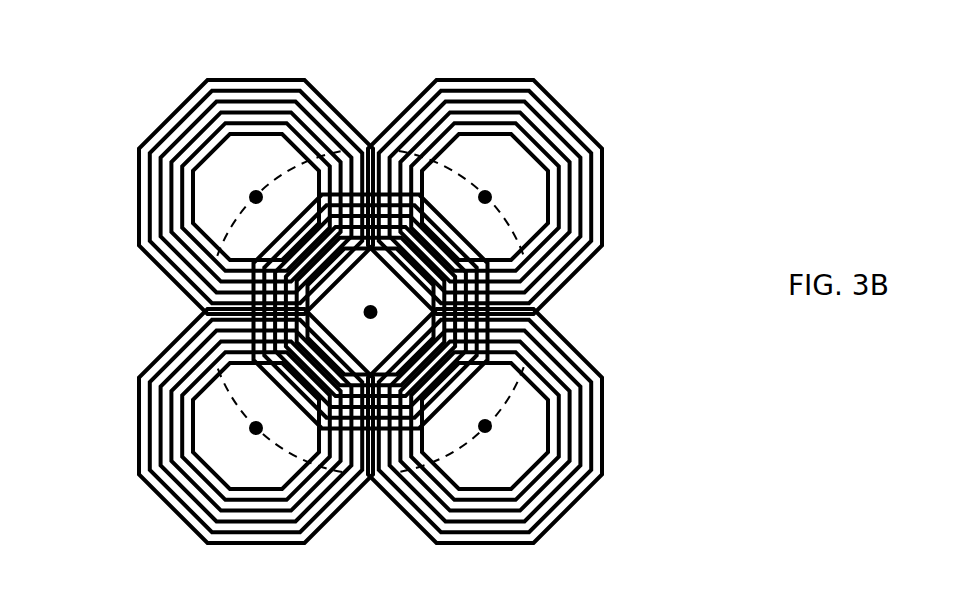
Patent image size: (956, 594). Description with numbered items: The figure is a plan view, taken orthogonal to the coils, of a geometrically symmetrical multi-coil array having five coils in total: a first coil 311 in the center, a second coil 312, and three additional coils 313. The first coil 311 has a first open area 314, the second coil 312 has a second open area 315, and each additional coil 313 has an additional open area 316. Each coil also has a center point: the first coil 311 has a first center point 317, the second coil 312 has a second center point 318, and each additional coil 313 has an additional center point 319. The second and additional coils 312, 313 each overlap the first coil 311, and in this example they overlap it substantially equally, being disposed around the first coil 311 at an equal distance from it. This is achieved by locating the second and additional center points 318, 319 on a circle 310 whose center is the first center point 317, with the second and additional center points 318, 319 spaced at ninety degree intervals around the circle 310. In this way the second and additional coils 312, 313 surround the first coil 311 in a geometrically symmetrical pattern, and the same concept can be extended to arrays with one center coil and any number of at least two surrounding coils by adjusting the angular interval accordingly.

The circle 310 is at (455, 309).
The first coil 311 is at (160, 422).
The second coil 312 is at (536, 179).
The additional coils 313 is at (365, 297).
The first open area 314 is at (198, 426).
The second open area 315 is at (542, 173).
The additional open area 316 is at (371, 263).
The first center point 317 is at (541, 197).
The second center point 318 is at (576, 160).
The additional center point 319 is at (362, 314).